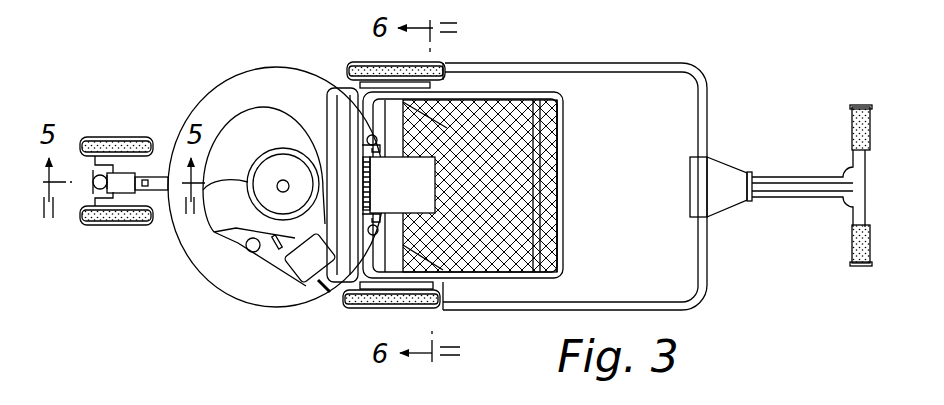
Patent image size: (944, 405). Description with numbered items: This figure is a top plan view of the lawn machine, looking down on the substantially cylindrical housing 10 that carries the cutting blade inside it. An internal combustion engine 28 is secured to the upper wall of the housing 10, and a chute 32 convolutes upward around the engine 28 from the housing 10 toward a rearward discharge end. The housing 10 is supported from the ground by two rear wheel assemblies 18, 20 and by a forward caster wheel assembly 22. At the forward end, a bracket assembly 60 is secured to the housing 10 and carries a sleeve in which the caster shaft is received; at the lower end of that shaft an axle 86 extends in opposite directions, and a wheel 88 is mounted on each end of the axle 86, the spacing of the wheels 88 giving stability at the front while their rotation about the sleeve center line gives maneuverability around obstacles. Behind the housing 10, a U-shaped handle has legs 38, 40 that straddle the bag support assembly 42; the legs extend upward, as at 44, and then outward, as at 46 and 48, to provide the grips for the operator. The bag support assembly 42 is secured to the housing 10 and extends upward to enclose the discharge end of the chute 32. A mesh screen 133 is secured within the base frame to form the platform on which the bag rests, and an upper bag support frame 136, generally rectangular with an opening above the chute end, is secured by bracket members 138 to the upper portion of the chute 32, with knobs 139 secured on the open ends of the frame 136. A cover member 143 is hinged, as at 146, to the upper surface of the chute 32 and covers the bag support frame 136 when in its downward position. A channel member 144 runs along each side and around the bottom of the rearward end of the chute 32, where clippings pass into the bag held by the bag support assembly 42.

The housing 10 is at (233, 298).
The rear wheel assembly 18 is at (362, 316).
The rear wheel assembly 20 is at (343, 66).
The forward caster wheel assembly 22 is at (95, 133).
The internal combustion engine 28 is at (257, 143).
The chute 32 is at (280, 72).
The handle leg 38 is at (583, 279).
The handle leg 40 is at (600, 67).
The bag support assembly 42 is at (565, 190).
The upward handle portion 44 is at (783, 177).
The outward handle portion 46 is at (860, 268).
The outward handle portion 48 is at (863, 104).
The bracket assembly 60 is at (165, 196).
The axle 86 is at (110, 197).
The wheel 88 is at (138, 138).
The mesh screen 133 is at (568, 252).
The upper bag support frame 136 is at (540, 137).
The bracket member 138 is at (368, 138).
The knob 139 is at (371, 236).
The cover member 143 is at (328, 255).
The channel member 144 is at (379, 210).
The hinge 146 is at (363, 174).